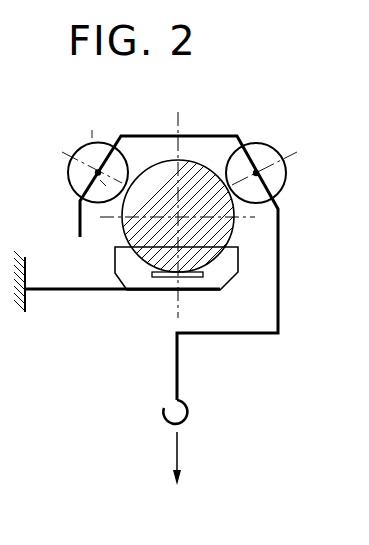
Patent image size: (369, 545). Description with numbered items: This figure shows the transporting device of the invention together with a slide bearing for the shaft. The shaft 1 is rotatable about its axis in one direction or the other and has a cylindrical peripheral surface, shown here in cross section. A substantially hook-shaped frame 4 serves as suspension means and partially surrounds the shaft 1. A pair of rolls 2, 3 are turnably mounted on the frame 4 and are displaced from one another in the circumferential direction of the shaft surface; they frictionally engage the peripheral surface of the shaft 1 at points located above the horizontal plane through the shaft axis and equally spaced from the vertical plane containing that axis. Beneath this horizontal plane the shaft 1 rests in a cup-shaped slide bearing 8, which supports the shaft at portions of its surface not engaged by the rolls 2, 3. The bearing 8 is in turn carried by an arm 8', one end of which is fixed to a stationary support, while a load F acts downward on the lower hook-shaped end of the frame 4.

The shaft 1 is at (229, 227).
The roll 2 is at (93, 156).
The roll 3 is at (262, 157).
The hook-shaped frame 4 is at (212, 135).
The cup-shaped slide bearing 8 is at (176, 300).
The arm 8' is at (117, 303).
The force F is at (186, 458).